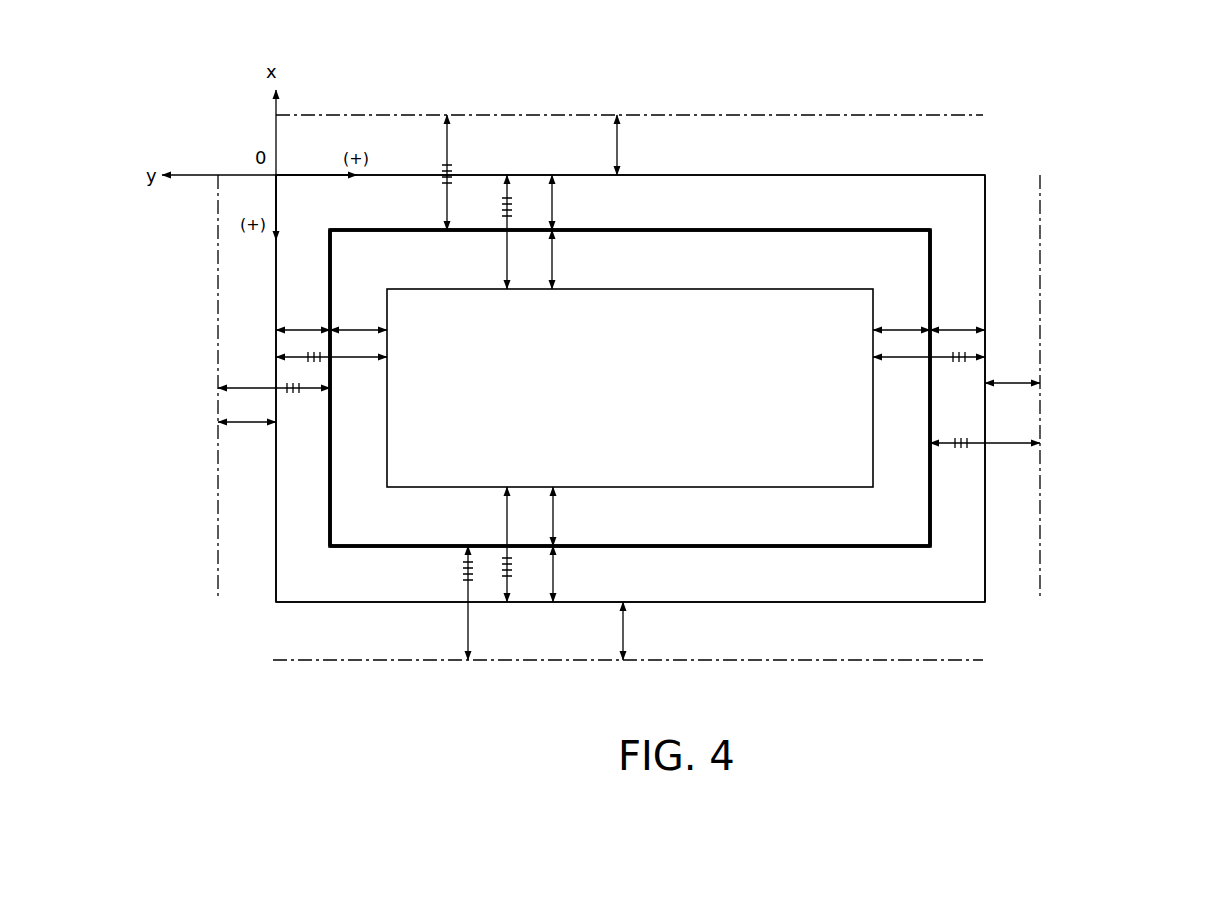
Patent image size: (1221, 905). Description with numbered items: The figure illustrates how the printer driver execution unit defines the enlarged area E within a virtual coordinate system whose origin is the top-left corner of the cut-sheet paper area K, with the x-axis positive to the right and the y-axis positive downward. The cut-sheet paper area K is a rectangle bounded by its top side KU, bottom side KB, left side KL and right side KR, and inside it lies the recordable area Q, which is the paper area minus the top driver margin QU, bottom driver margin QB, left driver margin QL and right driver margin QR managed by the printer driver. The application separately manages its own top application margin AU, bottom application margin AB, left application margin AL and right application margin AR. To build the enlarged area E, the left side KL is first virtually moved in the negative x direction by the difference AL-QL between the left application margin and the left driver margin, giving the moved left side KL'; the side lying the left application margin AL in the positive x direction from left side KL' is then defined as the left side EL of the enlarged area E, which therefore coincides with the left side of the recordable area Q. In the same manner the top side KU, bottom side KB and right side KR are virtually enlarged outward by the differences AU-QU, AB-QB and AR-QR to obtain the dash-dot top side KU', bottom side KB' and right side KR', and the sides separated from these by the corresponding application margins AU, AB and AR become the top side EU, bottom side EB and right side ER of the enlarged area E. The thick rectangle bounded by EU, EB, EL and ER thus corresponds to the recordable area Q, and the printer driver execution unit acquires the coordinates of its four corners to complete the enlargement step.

The cut-sheet paper area K is at (827, 173).
The enlarged area E is at (825, 226).
The recordable area Q is at (855, 226).
The top side KU is at (630, 151).
The bottom side KB is at (630, 623).
The left side KL is at (239, 409).
The right side KR is at (1022, 410).
The top side KU' is at (629, 79).
The bottom side KB' is at (628, 679).
The left side KL' is at (175, 387).
The right side KR' is at (1083, 387).
The top side EU is at (700, 228).
The bottom side EB is at (657, 550).
The left side EL is at (328, 429).
The right side ER is at (932, 498).
The top driver margin QU is at (556, 196).
The bottom driver margin QB is at (557, 571).
The left driver margin QL is at (303, 325).
The right driver margin QR is at (957, 324).
The top application margin AU is at (505, 262).
The bottom application margin AB is at (505, 511).
The left application margin AL is at (353, 361).
The right application margin AR is at (947, 362).
The difference between top application margin and top driver margin AU-QU is at (616, 130).
The difference between bottom application margin and bottom driver margin AB-QB is at (556, 514).
The difference between left application margin and left driver margin AL-QL is at (348, 323).
The difference between right application margin and right driver margin AR-QR is at (893, 323).